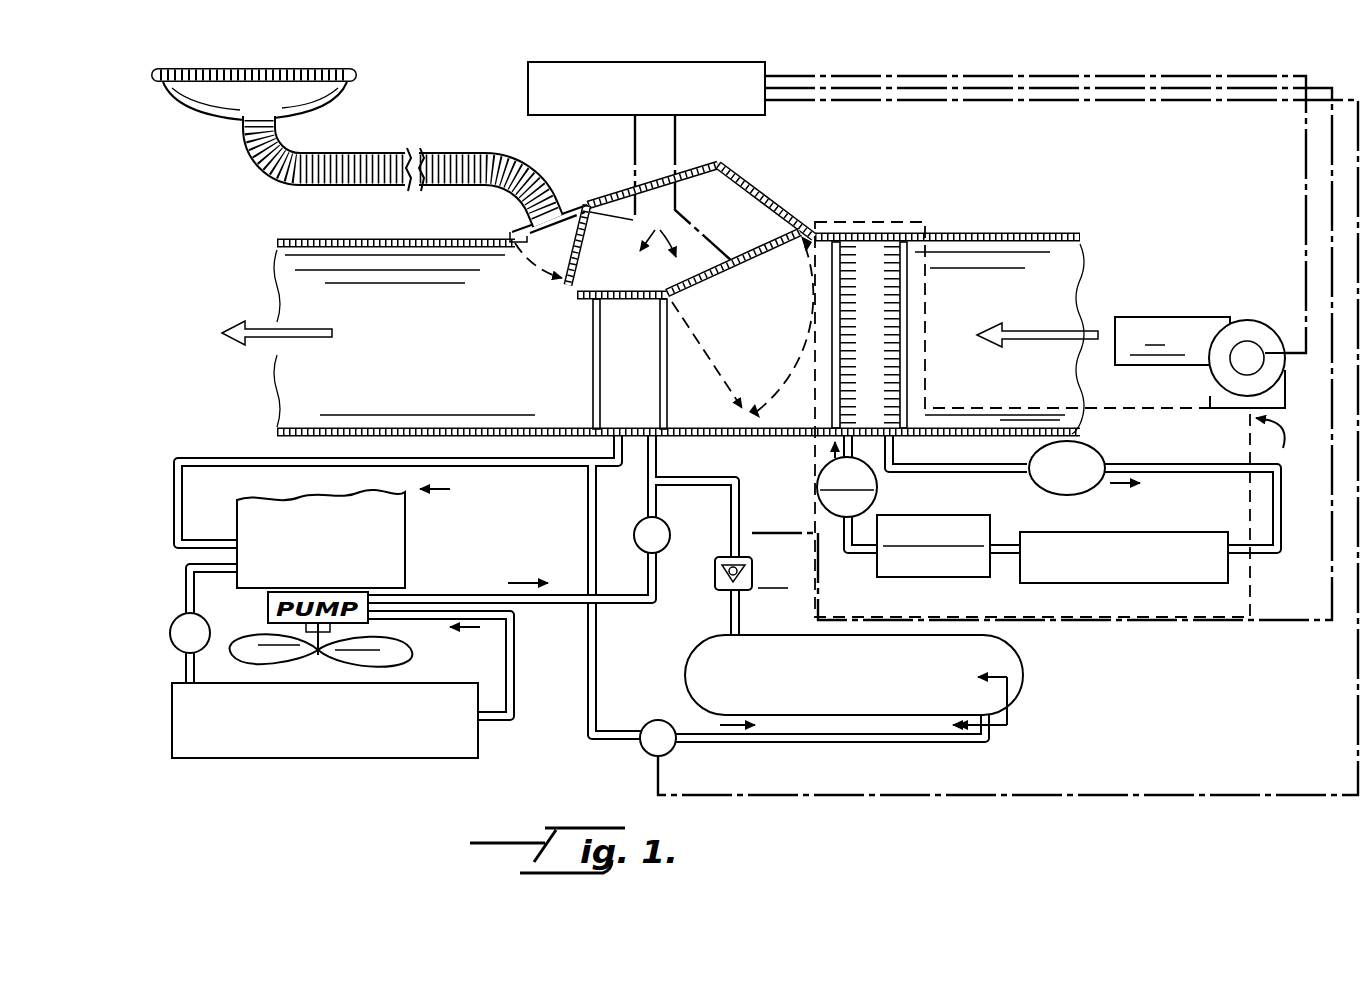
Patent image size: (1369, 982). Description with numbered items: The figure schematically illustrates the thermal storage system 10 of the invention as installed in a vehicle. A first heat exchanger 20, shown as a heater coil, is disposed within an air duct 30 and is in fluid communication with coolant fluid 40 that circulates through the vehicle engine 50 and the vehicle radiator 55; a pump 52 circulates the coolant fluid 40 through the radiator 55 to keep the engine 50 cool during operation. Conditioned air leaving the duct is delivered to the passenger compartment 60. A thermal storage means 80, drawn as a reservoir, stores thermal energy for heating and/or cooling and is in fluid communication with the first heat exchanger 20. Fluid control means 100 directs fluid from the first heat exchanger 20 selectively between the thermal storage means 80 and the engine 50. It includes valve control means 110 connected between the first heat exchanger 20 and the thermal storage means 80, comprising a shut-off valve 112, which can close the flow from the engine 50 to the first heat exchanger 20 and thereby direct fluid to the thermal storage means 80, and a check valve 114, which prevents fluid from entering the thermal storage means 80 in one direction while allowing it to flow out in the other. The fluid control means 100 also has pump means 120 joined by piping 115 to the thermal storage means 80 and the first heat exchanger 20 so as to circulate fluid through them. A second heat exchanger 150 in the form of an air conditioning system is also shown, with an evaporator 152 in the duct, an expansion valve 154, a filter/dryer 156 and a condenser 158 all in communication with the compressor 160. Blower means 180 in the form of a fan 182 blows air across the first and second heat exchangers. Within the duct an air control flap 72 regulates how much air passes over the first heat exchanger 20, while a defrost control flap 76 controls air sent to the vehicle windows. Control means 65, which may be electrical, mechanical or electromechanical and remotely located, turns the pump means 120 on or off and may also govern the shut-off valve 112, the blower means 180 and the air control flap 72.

The thermal storage system 10 is at (415, 825).
The first heat exchanger 20 is at (593, 410).
The air duct 30 is at (372, 240).
The coolant fluid 40 is at (588, 648).
The vehicle engine 50 is at (405, 540).
The pump 52 is at (172, 626).
The vehicle radiator 55 is at (350, 758).
The passenger compartment 60 is at (222, 333).
The control means 65 is at (740, 116).
The air control flap 72 is at (735, 272).
The defrost control flap 76 is at (580, 252).
The thermal storage means 80 is at (1023, 676).
The fluid control means 100 is at (702, 476).
The valve control means 110 is at (678, 527).
The shut-off valve 112 is at (660, 552).
The check valve 114 is at (752, 560).
The piping 115 is at (587, 535).
The pump means 120 is at (645, 752).
The second heat exchanger 150 is at (1252, 610).
The evaporator 152 is at (872, 232).
The expansion valve 154 is at (877, 490).
The filter/dryer 156 is at (893, 578).
The condenser 158 is at (1165, 584).
The compressor 160 is at (1100, 455).
The blower means 180 is at (1205, 316).
The fan 182 is at (1255, 322).